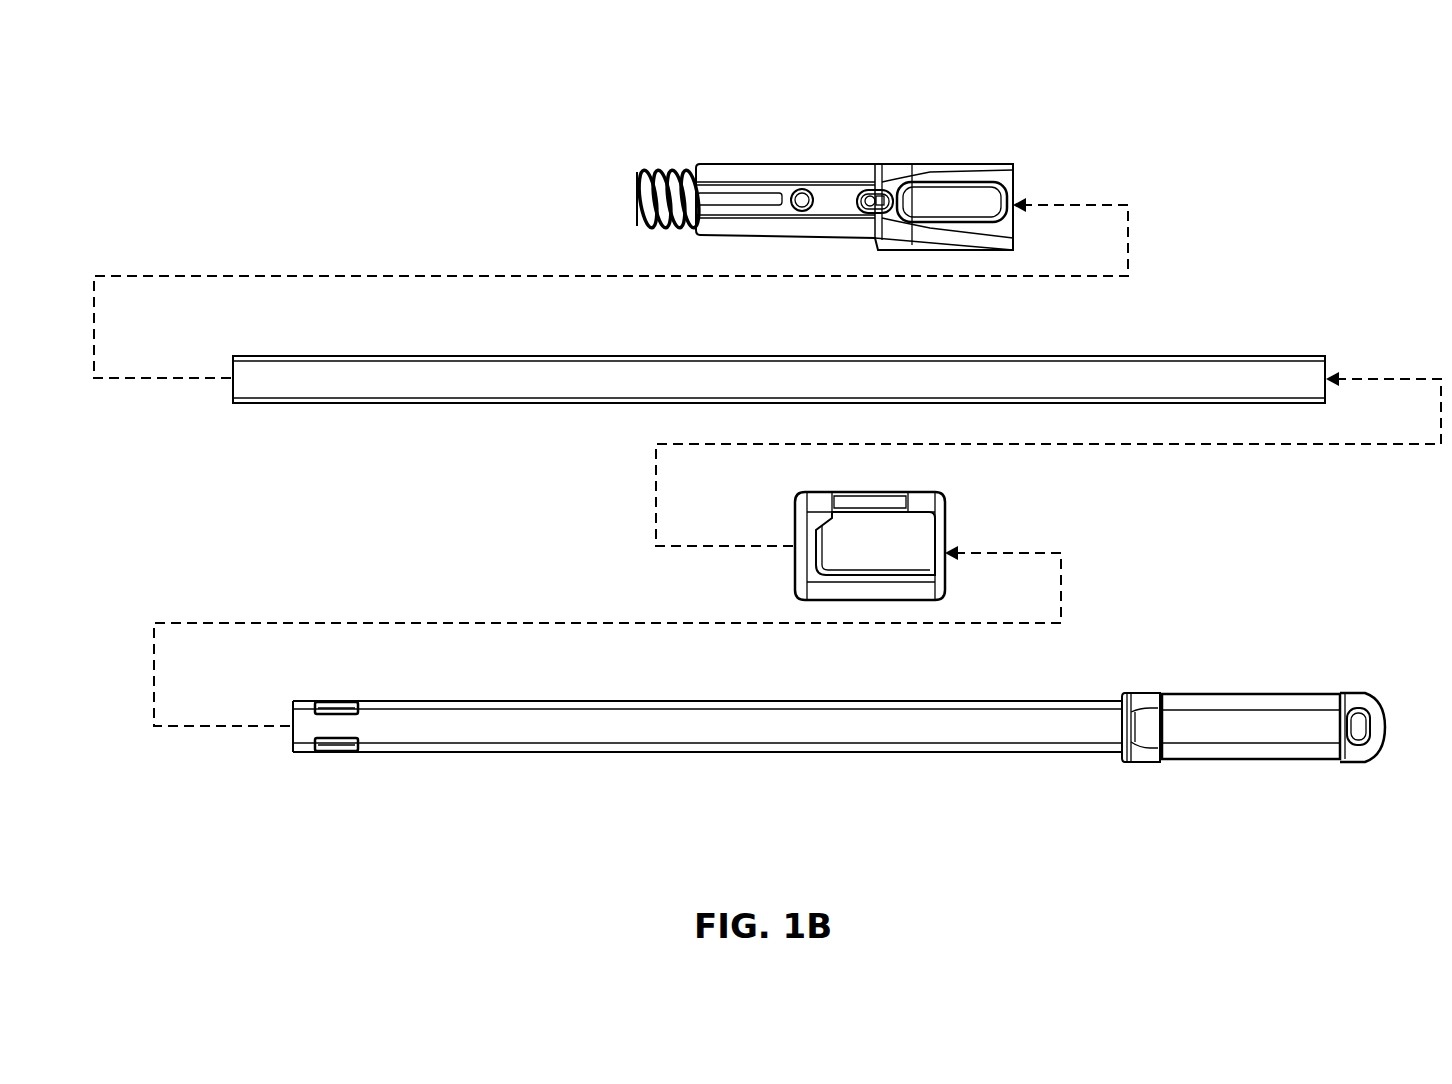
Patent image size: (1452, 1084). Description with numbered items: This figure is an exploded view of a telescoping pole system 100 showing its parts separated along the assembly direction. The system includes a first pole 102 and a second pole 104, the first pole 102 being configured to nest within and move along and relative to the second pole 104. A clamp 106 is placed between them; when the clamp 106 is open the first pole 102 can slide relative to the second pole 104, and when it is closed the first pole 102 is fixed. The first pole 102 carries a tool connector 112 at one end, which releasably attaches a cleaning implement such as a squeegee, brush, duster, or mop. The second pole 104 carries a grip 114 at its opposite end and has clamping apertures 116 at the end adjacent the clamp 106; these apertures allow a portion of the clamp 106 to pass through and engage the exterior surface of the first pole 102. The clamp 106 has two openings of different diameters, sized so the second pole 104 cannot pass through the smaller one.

The telescoping pole system 100 is at (1298, 87).
The first pole 102 is at (526, 385).
The second pole 104 is at (855, 735).
The clamp 106 is at (795, 560).
The tool connector 112 is at (1006, 162).
The grip 114 is at (1249, 762).
The clamping apertures 116 is at (340, 758).